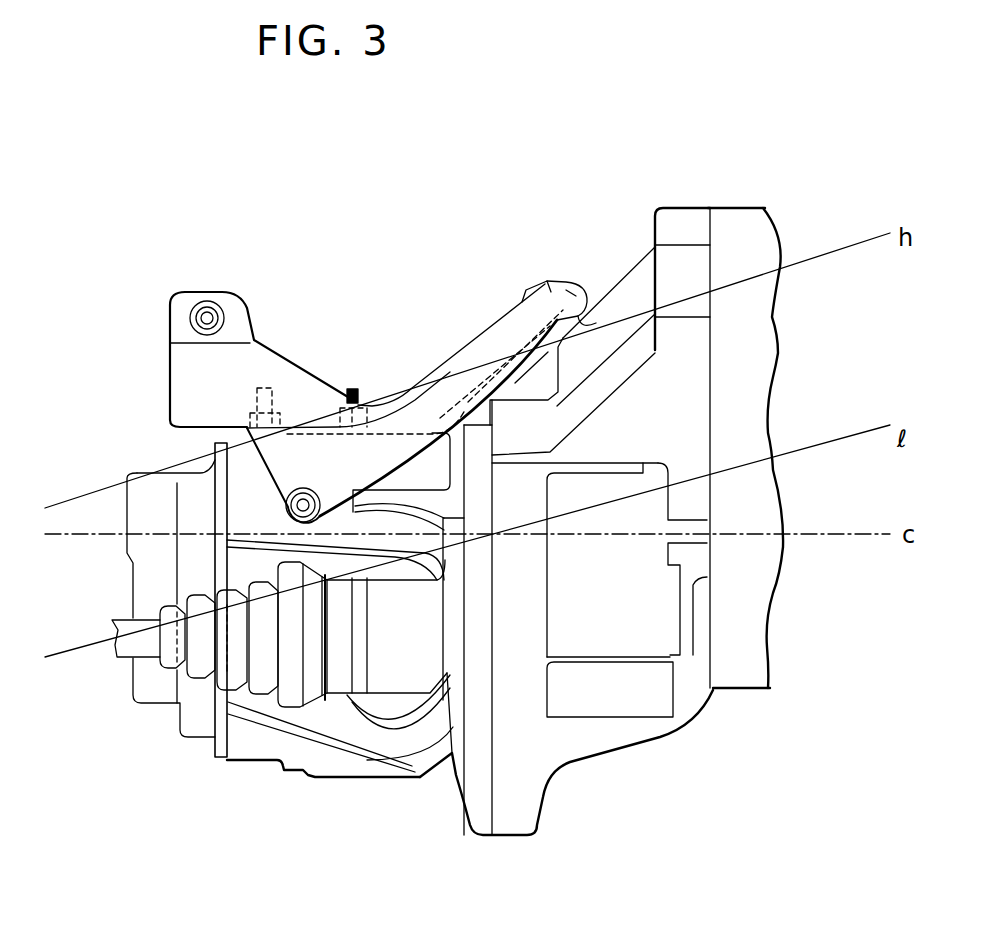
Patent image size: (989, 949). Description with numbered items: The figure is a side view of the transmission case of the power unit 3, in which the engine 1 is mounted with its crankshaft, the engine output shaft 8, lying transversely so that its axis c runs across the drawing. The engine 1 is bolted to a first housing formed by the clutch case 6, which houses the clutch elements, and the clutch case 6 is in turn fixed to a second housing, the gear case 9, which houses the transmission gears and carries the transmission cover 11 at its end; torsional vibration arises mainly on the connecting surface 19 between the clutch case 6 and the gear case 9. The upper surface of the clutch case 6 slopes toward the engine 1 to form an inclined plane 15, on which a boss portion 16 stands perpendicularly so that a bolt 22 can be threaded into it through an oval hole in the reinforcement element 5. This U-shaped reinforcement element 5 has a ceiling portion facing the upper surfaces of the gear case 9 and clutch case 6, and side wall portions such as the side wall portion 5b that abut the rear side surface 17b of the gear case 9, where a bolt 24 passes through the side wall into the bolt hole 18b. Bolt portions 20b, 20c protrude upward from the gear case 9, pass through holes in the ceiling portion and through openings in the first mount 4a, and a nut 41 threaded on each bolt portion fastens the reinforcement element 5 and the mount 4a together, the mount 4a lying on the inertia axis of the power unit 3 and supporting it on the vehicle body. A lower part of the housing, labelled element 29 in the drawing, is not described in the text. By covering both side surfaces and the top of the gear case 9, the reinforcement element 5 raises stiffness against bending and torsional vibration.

The engine 1 is at (737, 207).
The power unit 3 is at (681, 200).
The first mount 4a is at (168, 311).
The reinforcement element 5 is at (482, 348).
The side wall portion 5b is at (268, 465).
The clutch case 6 is at (614, 280).
The engine output shaft (crankshaft) 8 is at (758, 547).
The gear case 9 is at (347, 767).
The transmission cover 11 is at (162, 472).
The inclined plane 15 is at (653, 247).
The boss portion 16 is at (586, 297).
The rear side surface 17b is at (247, 755).
The bolt hole 18b is at (318, 500).
The connecting surface 19 is at (441, 425).
The bolt portion 20b is at (351, 388).
The bolt portion 20c is at (260, 392).
The bolt 22 is at (526, 291).
The bolt 24 is at (303, 493).
The housing foot 29 is at (497, 813).
The nut 41 is at (281, 408).